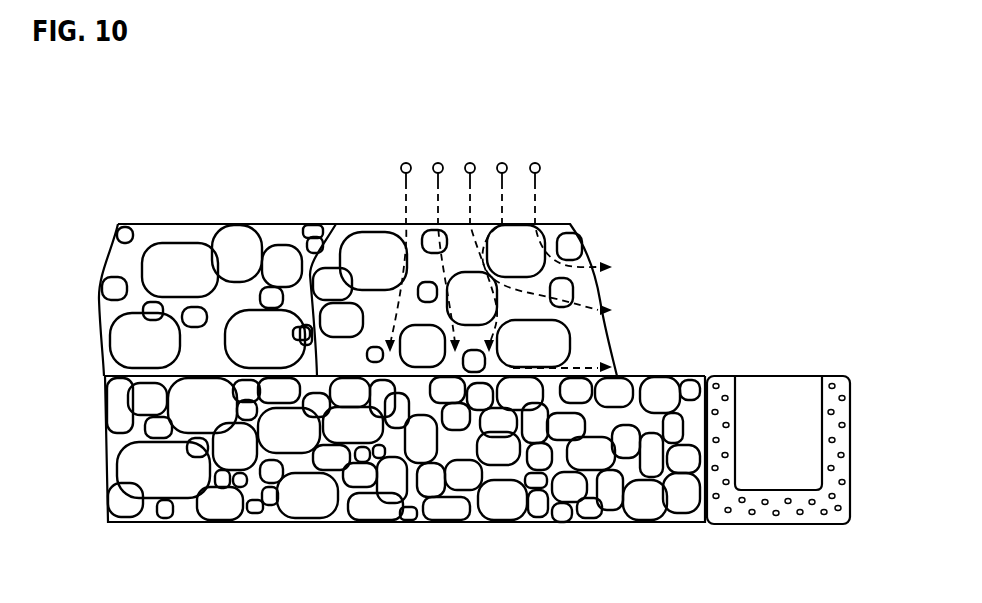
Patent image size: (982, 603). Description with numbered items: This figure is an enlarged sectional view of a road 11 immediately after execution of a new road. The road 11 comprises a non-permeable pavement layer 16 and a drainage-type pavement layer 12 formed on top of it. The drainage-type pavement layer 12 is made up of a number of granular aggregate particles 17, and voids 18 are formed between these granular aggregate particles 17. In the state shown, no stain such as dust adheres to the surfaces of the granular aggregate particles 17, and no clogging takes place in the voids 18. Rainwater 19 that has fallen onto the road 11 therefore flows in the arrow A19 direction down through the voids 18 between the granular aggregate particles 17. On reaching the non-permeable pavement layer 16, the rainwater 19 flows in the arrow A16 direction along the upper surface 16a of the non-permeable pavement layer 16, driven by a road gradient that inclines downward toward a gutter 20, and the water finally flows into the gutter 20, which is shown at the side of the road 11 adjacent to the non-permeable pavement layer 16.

The road 11 is at (618, 287).
The drainage-type pavement layer 12 is at (128, 265).
The non-permeable pavement layer 16 is at (115, 443).
The upper surface of the non-permeable pavement layer 16a is at (336, 224).
The granular aggregate particles 17 is at (238, 240).
The voids 18 is at (515, 310).
The rainwater 19 is at (405, 162).
The arrow A19 direction A19 is at (483, 235).
The arrow A16 direction A16 is at (585, 367).
The gutter 20 is at (735, 447).